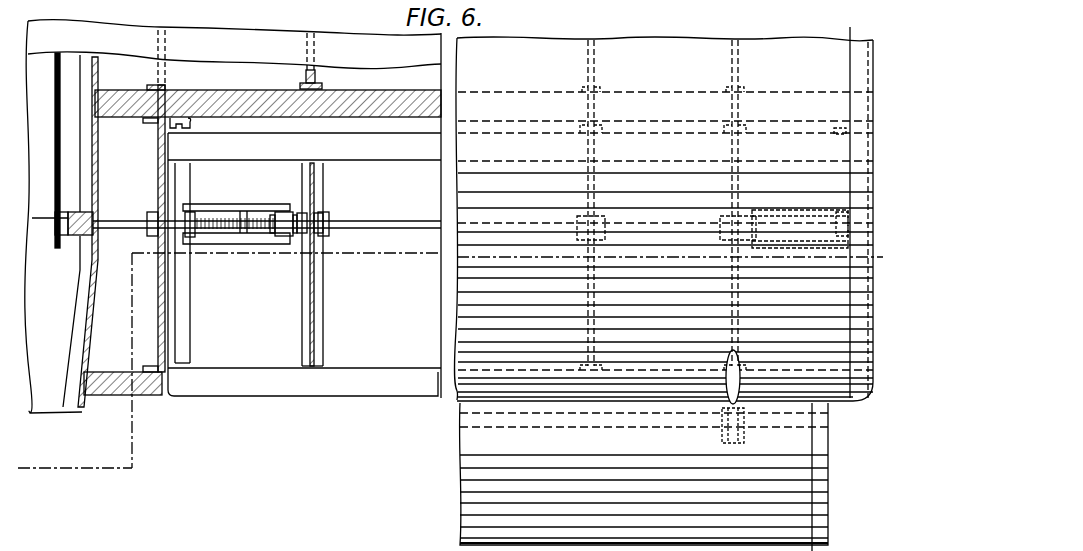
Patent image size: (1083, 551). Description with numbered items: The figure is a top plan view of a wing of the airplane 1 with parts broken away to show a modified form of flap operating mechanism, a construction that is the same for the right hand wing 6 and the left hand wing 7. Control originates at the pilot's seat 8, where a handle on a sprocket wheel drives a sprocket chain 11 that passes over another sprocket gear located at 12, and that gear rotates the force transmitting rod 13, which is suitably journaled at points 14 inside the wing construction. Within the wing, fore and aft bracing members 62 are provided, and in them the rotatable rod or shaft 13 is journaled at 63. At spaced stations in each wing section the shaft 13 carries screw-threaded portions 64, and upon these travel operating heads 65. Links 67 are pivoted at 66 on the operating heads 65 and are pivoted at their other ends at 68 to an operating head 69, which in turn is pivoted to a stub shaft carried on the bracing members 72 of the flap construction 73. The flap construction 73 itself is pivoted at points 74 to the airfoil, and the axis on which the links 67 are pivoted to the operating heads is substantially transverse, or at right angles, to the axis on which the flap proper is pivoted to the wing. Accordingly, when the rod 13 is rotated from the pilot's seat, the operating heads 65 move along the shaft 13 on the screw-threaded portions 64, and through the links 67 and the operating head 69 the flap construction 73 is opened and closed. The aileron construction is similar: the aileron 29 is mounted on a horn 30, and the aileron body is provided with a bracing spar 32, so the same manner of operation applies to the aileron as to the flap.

The airplane 1 is at (78, 410).
The right hand wing 6 is at (142, 398).
The left hand wing 7 is at (35, 469).
The pilot's seat 8 is at (852, 27).
The sprocket chain 11 is at (58, 168).
The sprocket gear 12 is at (62, 270).
The force transmitting rod 13 is at (62, 232).
The journal points 14 is at (90, 214).
The aileron 29 is at (462, 462).
The horn 30 is at (726, 392).
The bracing spar 32 is at (540, 418).
The fore and aft bracing member 62 is at (158, 172).
The journal 63 is at (150, 233).
The screw-threaded portion 64 is at (245, 230).
The operating head 65 is at (277, 212).
The pivot 66 is at (290, 204).
The link 67 is at (242, 205).
The pivot 68 is at (314, 208).
The operating head 69 is at (198, 216).
The bracing member 72 is at (178, 313).
The flap construction 73 is at (284, 396).
The pivot point 74 is at (192, 130).